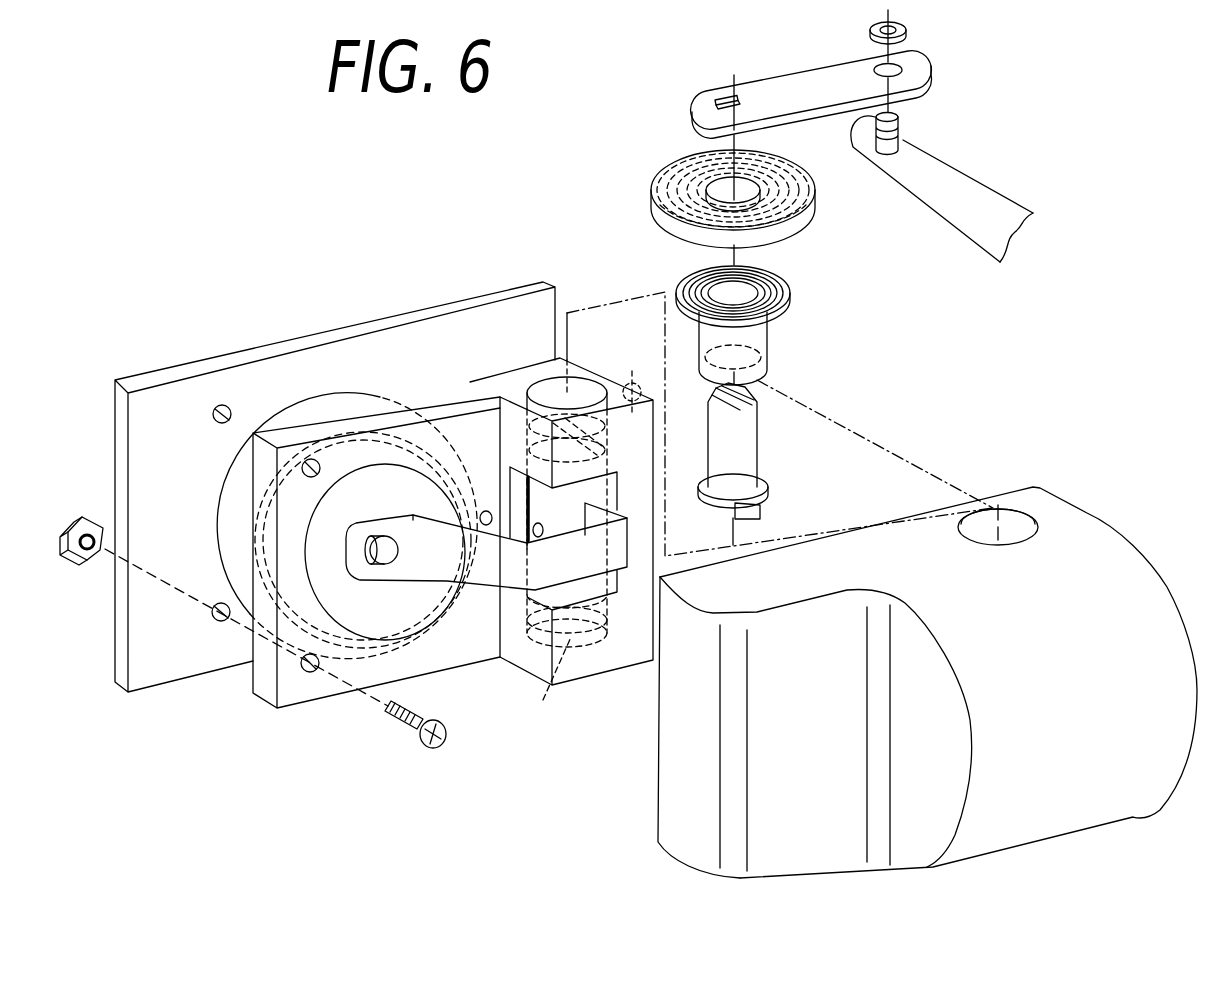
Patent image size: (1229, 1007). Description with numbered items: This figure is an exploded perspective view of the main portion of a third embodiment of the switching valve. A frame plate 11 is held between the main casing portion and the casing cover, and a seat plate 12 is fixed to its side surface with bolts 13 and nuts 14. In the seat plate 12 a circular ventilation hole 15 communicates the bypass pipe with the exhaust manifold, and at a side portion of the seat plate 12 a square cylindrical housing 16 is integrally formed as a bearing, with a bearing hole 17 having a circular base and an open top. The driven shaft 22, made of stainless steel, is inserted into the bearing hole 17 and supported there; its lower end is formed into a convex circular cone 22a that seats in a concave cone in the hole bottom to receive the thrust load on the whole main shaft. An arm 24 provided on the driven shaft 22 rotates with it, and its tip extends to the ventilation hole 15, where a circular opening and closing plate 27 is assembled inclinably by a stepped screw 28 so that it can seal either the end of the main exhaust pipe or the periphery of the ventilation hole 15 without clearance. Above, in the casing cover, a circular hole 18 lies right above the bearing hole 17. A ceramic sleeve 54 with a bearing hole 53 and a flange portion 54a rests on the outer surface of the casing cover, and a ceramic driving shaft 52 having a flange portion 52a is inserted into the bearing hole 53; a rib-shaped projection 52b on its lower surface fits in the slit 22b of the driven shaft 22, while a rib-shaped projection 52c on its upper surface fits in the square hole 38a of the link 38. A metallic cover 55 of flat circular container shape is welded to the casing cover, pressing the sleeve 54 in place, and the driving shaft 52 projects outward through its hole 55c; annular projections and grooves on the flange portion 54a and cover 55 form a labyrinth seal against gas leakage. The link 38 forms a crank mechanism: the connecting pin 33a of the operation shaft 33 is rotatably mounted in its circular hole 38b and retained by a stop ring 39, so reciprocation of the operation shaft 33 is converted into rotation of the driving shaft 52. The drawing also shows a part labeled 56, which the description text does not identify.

The frame plate 11 is at (173, 378).
The seat plate 12 is at (295, 704).
The bolts 13 is at (404, 733).
The nuts 14 is at (72, 563).
The circular ventilation hole 15 is at (398, 637).
The square cylindrical housing 16 is at (598, 665).
The bearing hole 17 is at (590, 385).
The circular hole 18 is at (1033, 512).
The driven shaft 22 is at (530, 492).
The convex circular cone 22a is at (557, 687).
The slit 22b is at (627, 375).
The arm 24 is at (474, 590).
The opening and closing plate 27 is at (357, 630).
The stepped screw 28 is at (388, 548).
The operation shaft 33 is at (1008, 210).
The connecting pin 33a is at (903, 130).
The link 38 is at (790, 80).
The square hole 38a is at (723, 93).
The circular hole 38b is at (900, 67).
The stop ring 39 is at (872, 34).
The driving shaft 52 is at (757, 461).
The flange portion 52a is at (770, 488).
The rib-shaped projection 52b is at (766, 508).
The rib-shaped projection 52c is at (750, 400).
The bearing hole 53 is at (767, 273).
The sleeve 54 is at (768, 354).
The flange portion 54a is at (784, 306).
The metallic cover 55 is at (816, 203).
The hole 55c is at (750, 182).
The housing 56 is at (1100, 527).